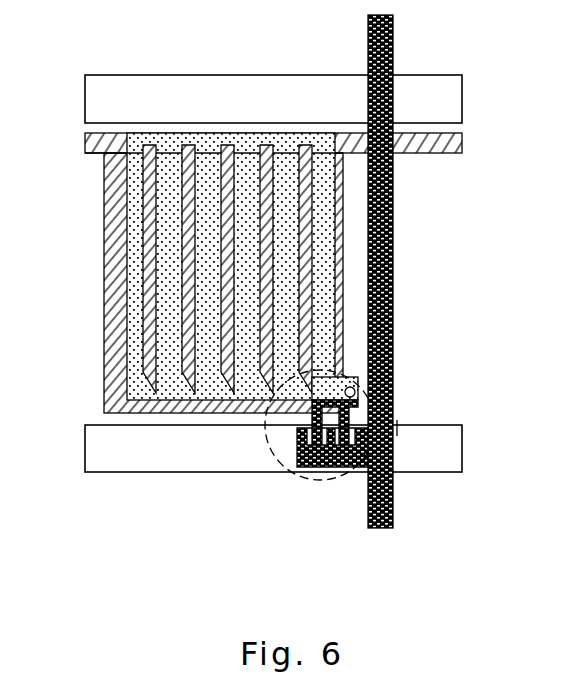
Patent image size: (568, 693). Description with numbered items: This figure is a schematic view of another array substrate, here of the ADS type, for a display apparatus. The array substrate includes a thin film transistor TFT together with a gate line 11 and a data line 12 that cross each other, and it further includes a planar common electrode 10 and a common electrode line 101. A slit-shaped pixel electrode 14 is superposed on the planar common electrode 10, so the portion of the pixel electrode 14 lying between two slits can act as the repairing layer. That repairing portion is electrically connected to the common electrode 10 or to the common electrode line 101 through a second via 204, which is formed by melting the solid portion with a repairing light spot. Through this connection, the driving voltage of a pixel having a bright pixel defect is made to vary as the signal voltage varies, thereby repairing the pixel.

The common electrode 10 is at (110, 355).
The gate line 11 is at (432, 100).
The data line 12 is at (395, 278).
The pixel electrode 14 is at (130, 300).
The common electrode line 101 is at (95, 148).
The second via 204 is at (200, 254).
The thin film transistor TFT is at (333, 481).